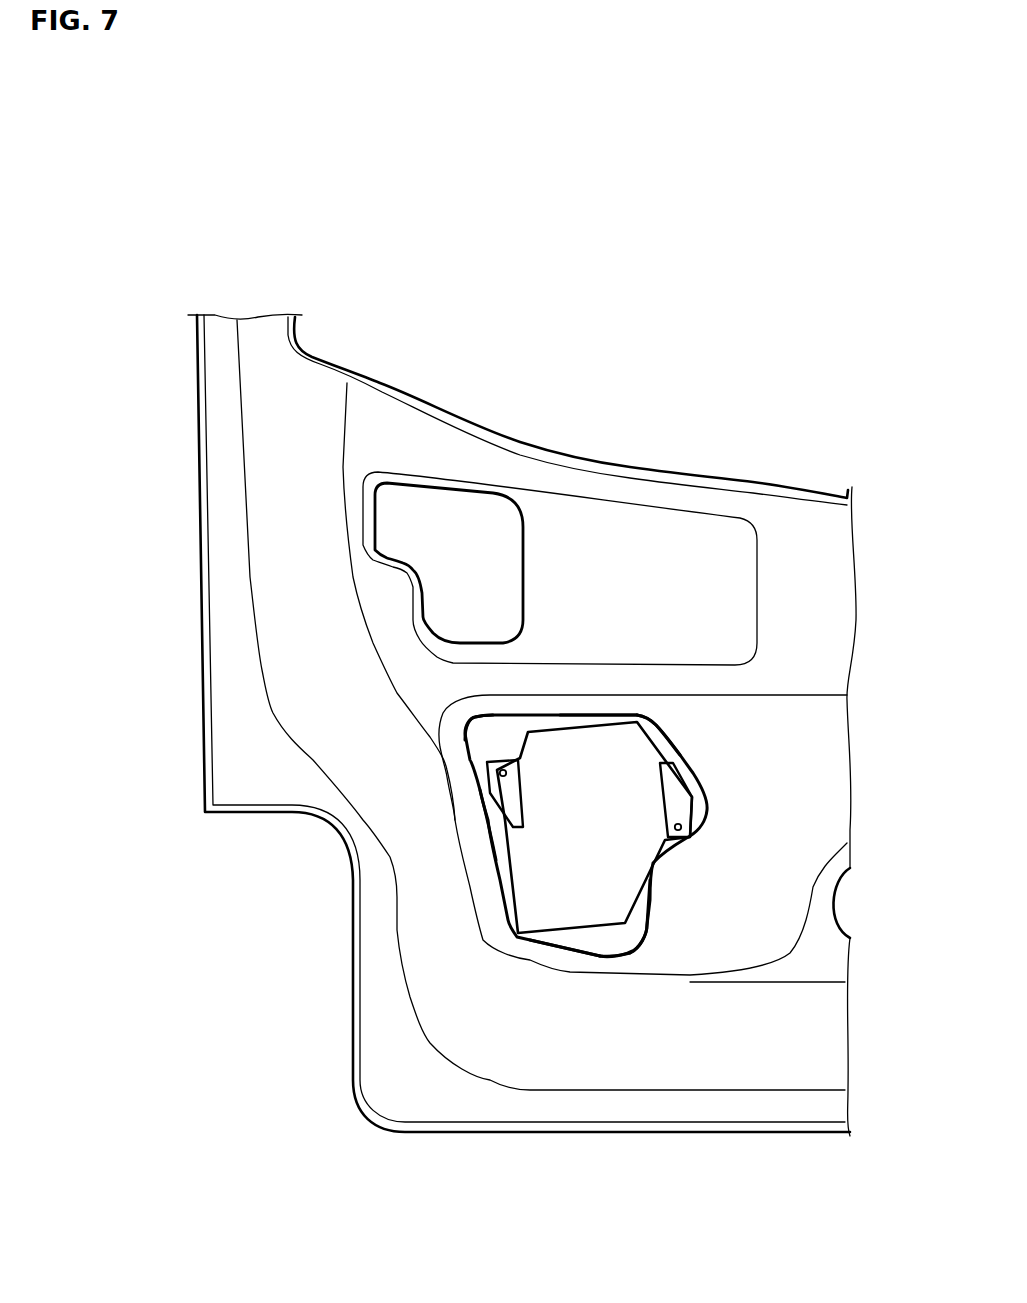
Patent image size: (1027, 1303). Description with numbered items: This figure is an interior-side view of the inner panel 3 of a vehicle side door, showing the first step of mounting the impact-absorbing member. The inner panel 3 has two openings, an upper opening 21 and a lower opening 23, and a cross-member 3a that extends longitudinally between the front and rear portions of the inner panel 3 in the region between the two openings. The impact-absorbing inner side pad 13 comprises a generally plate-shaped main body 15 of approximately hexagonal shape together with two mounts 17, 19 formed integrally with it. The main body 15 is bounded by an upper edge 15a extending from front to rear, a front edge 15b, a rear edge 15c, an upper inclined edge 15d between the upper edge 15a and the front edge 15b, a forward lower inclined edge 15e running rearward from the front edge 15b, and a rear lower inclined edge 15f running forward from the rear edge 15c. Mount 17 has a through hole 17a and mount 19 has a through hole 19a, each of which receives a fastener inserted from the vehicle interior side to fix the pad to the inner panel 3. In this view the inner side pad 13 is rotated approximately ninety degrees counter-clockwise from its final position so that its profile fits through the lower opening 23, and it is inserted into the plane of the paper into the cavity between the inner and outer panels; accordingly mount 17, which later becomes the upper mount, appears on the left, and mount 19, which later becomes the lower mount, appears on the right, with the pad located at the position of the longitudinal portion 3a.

The inner panel 3 is at (240, 727).
The cross-member 3a is at (483, 683).
The impact-absorbing inner side pad 13 is at (499, 892).
The main body 15 is at (545, 895).
The upper edge 15a is at (507, 840).
The front edge 15b is at (585, 712).
The rear edge 15c is at (572, 940).
The upper inclined edge 15d is at (470, 735).
The forward lower inclined edge 15e is at (663, 740).
The rear lower inclined edge 15f is at (653, 898).
The mount 17 is at (490, 800).
The through hole 17a is at (487, 773).
The mount 19 is at (677, 797).
The through hole 19a is at (690, 831).
The opening 21 is at (533, 737).
The opening 23 is at (616, 942).